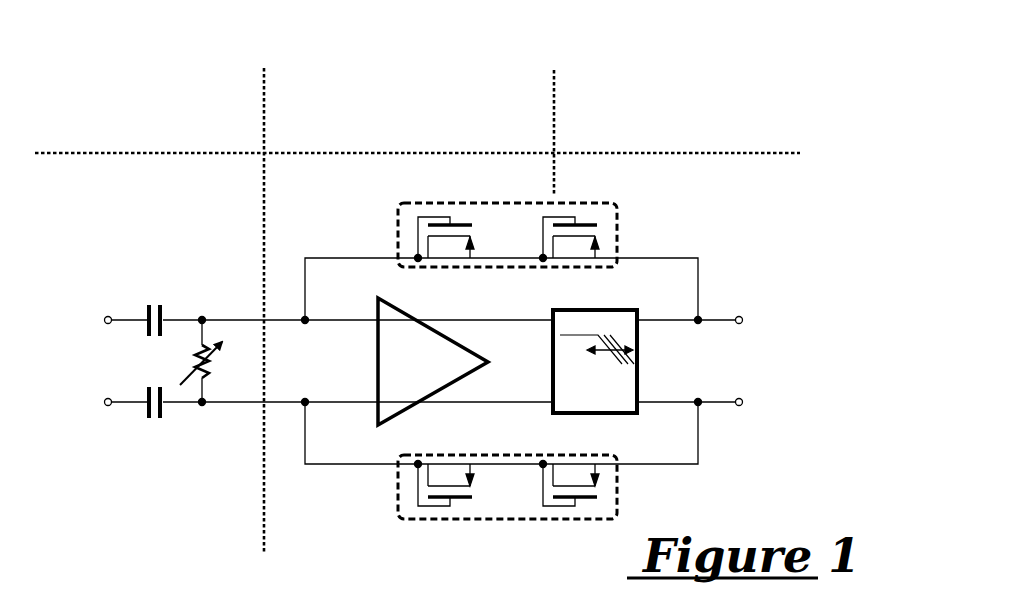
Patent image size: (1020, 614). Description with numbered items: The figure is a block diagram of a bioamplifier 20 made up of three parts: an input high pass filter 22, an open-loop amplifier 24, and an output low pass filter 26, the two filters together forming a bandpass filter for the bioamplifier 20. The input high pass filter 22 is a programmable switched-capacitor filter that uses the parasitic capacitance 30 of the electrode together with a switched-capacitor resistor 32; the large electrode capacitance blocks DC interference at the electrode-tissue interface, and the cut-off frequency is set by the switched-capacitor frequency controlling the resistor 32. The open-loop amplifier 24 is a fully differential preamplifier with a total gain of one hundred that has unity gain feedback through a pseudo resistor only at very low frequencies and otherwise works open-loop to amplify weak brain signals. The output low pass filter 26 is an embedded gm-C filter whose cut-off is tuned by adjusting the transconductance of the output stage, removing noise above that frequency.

The bioamplifier 20 is at (707, 45).
The input high pass filter 22 is at (92, 226).
The open-loop amplifier 24 is at (360, 208).
The output low pass filter 26 is at (637, 343).
The parasitic capacitance of the electrode 30 is at (128, 430).
The switched-capacitor resistor 32 is at (213, 376).